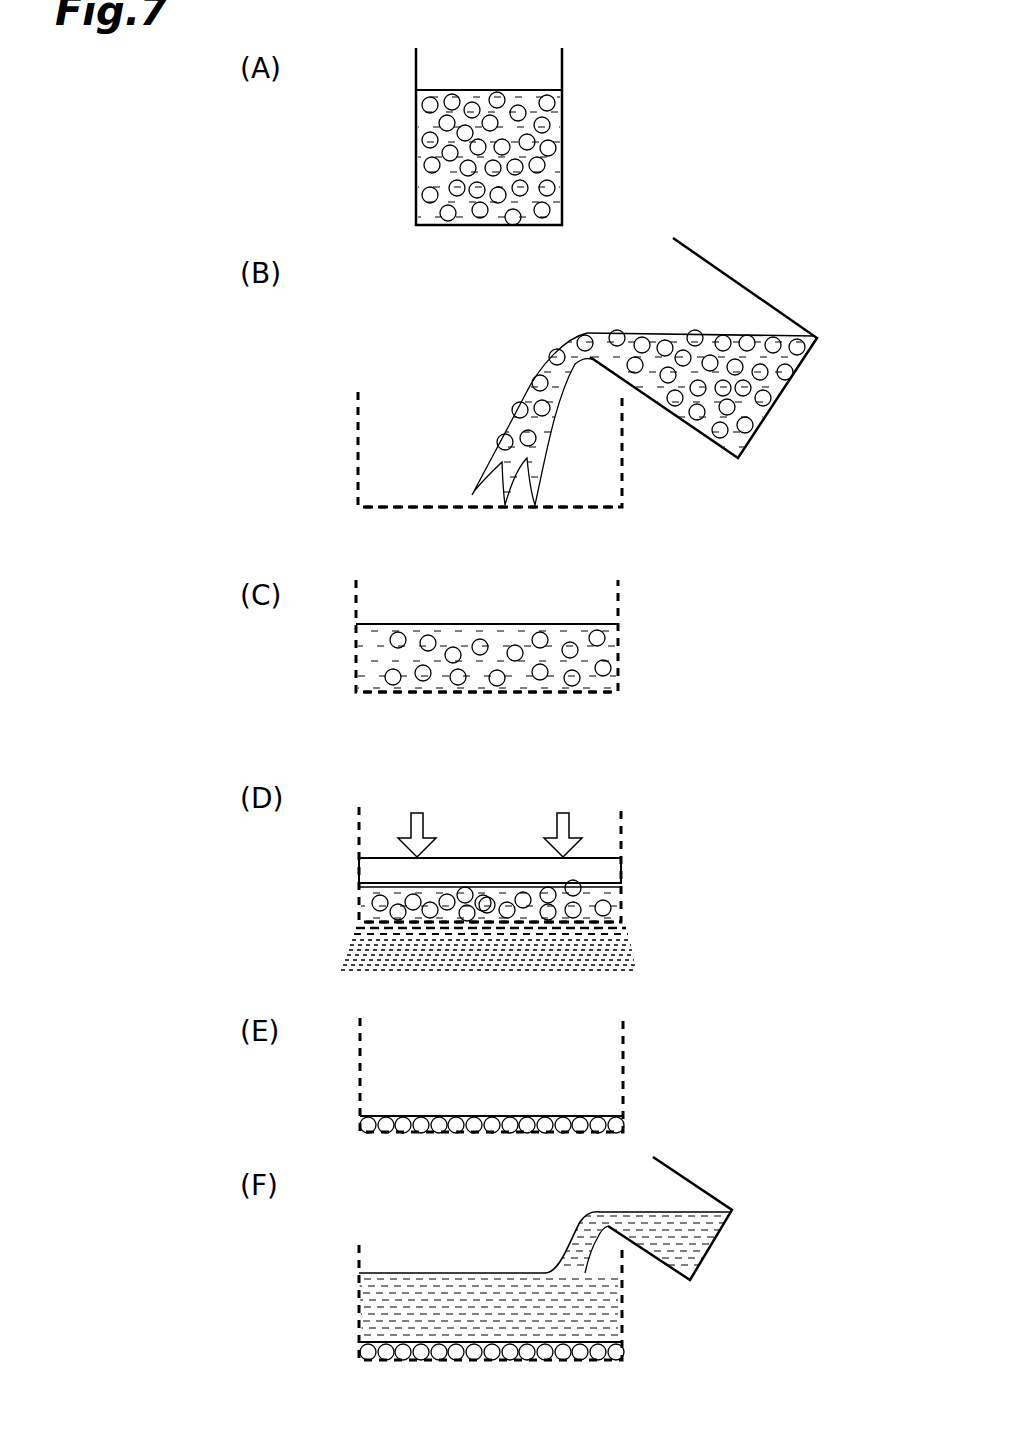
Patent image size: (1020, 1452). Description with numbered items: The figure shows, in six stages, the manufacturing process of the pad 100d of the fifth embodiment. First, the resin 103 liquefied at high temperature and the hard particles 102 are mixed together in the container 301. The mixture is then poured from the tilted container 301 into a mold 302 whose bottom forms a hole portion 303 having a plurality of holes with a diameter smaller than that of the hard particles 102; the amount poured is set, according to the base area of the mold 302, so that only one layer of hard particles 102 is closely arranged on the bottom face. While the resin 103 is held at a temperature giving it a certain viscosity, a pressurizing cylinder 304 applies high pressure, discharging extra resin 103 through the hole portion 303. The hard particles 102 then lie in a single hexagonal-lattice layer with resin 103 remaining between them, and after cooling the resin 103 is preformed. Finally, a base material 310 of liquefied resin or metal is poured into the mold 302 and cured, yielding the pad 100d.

The container 301 is at (562, 73).
The hard particles 102 is at (555, 148).
The resin 103 is at (552, 170).
The mold 302 is at (623, 458).
The hole portion 303 is at (564, 512).
The pressurizing cylinder 304 is at (590, 868).
The base material 310 is at (415, 1292).
The pad 100d is at (327, 1274).